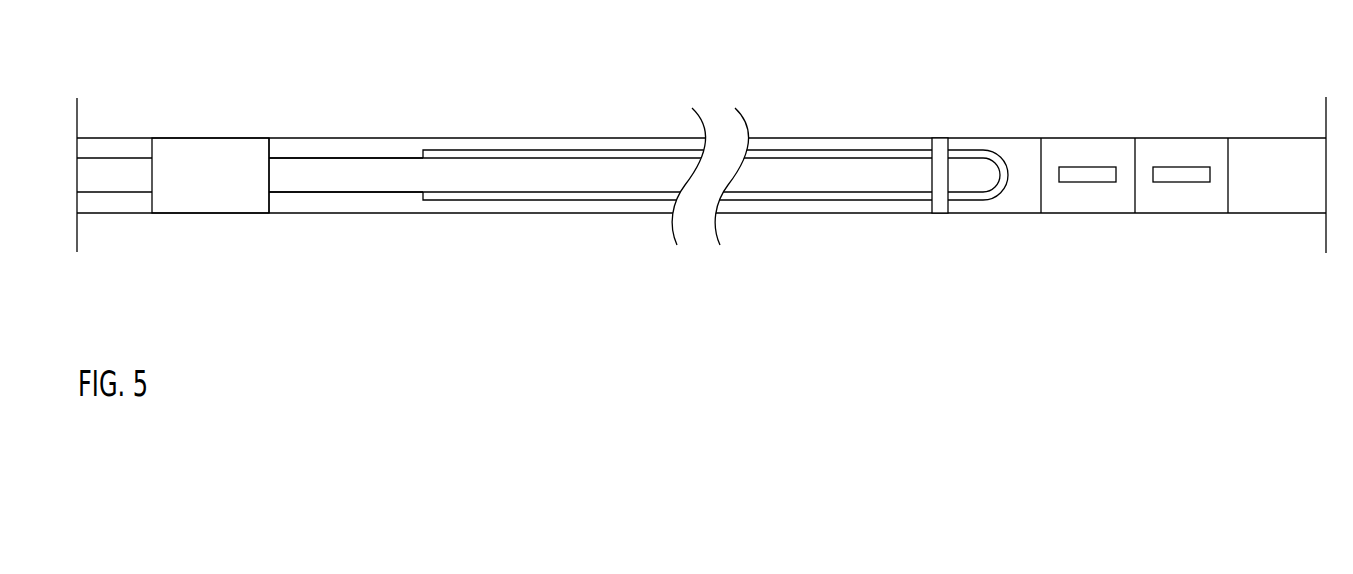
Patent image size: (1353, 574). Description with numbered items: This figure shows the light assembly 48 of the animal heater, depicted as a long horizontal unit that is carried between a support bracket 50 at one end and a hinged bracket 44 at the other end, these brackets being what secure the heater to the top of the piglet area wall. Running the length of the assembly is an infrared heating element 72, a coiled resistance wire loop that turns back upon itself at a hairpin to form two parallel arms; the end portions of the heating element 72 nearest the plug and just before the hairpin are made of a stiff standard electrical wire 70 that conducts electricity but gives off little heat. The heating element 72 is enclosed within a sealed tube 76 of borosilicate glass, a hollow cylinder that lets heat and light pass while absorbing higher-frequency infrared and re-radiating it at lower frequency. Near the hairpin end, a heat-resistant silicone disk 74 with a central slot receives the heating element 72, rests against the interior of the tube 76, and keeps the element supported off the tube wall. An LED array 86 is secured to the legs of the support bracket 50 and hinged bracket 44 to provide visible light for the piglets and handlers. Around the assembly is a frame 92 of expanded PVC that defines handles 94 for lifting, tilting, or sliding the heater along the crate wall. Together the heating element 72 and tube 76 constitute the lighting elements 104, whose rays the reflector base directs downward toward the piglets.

The hinged bracket 44 is at (1326, 113).
The light assembly 48 is at (853, 133).
The support bracket 50 is at (77, 120).
The electrical wire 70 is at (335, 158).
The heating element 72 is at (553, 187).
The silicone disk 74 is at (942, 138).
The tube 76 is at (293, 138).
The LED array 86 is at (215, 138).
The frame 92 is at (1162, 138).
The handles 94 is at (1168, 182).
The lighting elements 104 is at (948, 288).